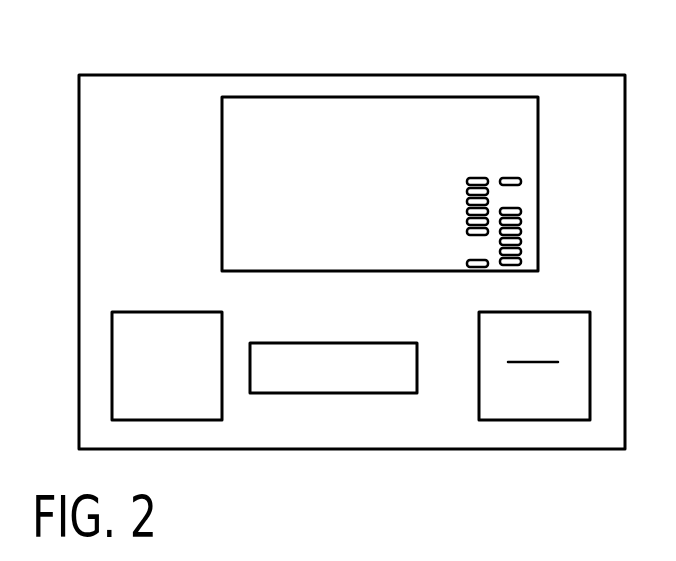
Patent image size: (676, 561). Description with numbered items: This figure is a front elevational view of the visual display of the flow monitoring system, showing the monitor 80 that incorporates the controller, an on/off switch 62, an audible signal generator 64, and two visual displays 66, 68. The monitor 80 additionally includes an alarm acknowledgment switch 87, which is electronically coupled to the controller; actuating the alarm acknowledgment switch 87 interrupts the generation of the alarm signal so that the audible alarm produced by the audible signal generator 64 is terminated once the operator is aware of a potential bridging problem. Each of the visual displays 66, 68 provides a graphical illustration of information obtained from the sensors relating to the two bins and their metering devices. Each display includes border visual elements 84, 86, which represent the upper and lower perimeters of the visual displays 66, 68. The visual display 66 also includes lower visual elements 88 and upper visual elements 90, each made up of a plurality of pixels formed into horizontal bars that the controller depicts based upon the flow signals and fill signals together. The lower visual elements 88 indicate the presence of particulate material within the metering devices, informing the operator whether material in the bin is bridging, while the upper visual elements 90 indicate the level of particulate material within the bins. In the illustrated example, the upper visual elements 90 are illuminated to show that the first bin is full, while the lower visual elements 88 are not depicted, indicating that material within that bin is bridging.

The monitor 80 is at (133, 75).
The visual display 66 is at (476, 160).
The visual display 68 is at (509, 161).
The border visual element 86 is at (467, 181).
The upper visual elements 90 is at (467, 191).
The lower visual elements 88 is at (522, 252).
The border visual element 84 is at (466, 264).
The audible signal generator 64 is at (197, 421).
The alarm acknowledgment switch 87 is at (336, 394).
The on/off switch 62 is at (535, 421).